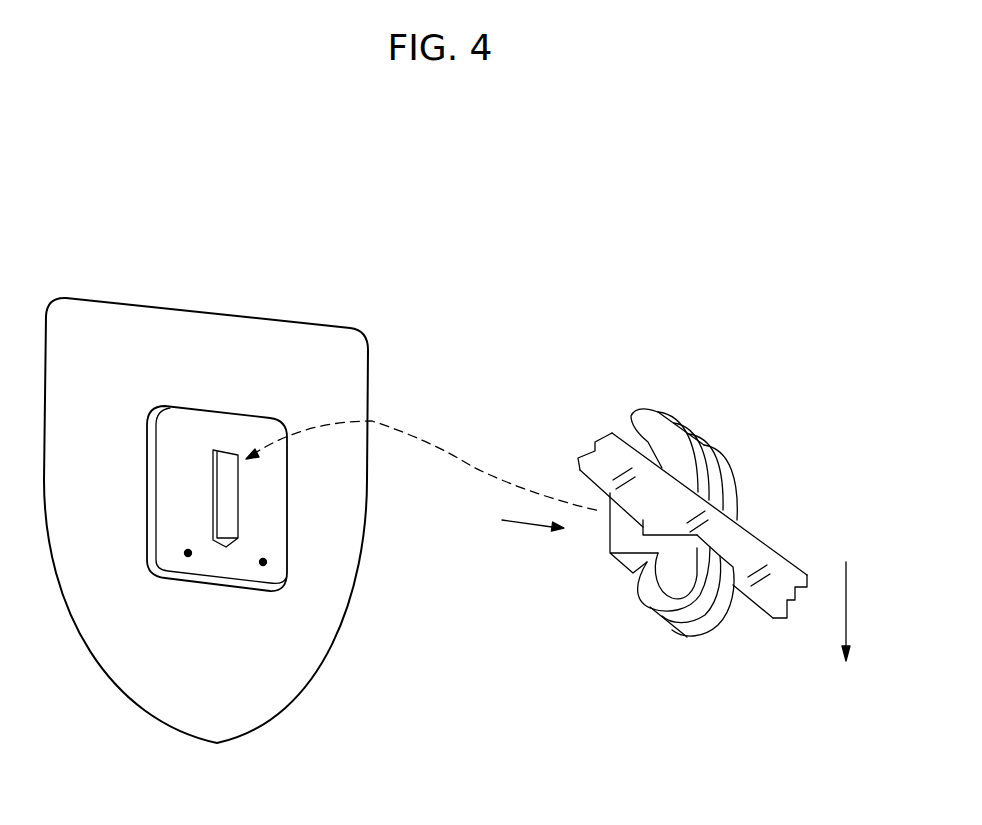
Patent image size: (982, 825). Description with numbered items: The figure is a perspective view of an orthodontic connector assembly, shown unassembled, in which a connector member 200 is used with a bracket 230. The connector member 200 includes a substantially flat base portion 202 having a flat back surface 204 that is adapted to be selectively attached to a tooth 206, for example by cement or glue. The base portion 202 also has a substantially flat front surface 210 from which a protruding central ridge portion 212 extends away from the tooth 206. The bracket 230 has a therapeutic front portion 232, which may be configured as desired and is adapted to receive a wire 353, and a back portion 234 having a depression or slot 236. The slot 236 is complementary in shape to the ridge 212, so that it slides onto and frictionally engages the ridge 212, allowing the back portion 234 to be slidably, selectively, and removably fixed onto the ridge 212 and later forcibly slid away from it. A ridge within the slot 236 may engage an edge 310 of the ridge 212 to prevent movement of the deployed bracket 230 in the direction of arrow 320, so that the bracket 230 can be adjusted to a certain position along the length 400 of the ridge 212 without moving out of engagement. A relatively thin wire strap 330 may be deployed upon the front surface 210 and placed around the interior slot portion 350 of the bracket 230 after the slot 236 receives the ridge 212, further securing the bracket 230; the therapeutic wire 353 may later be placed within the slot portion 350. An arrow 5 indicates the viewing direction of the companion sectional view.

The viewing direction arrow 5 is at (522, 522).
The connector member 200 is at (206, 491).
The base portion 202 is at (279, 543).
The back surface 204 is at (146, 560).
The tooth 206 is at (160, 378).
The front surface 210 is at (220, 442).
The central ridge portion 212 is at (225, 498).
The bracket 230 is at (692, 522).
The therapeutic front portion 232 is at (776, 511).
The back portion 234 is at (567, 472).
The slot 236 is at (645, 572).
The edge 310 is at (227, 448).
The arrow 320 is at (847, 597).
The wire strap 330 is at (188, 556).
The interior slot portion 350 is at (640, 527).
The wire 353 is at (750, 578).
The length 400 is at (177, 451).